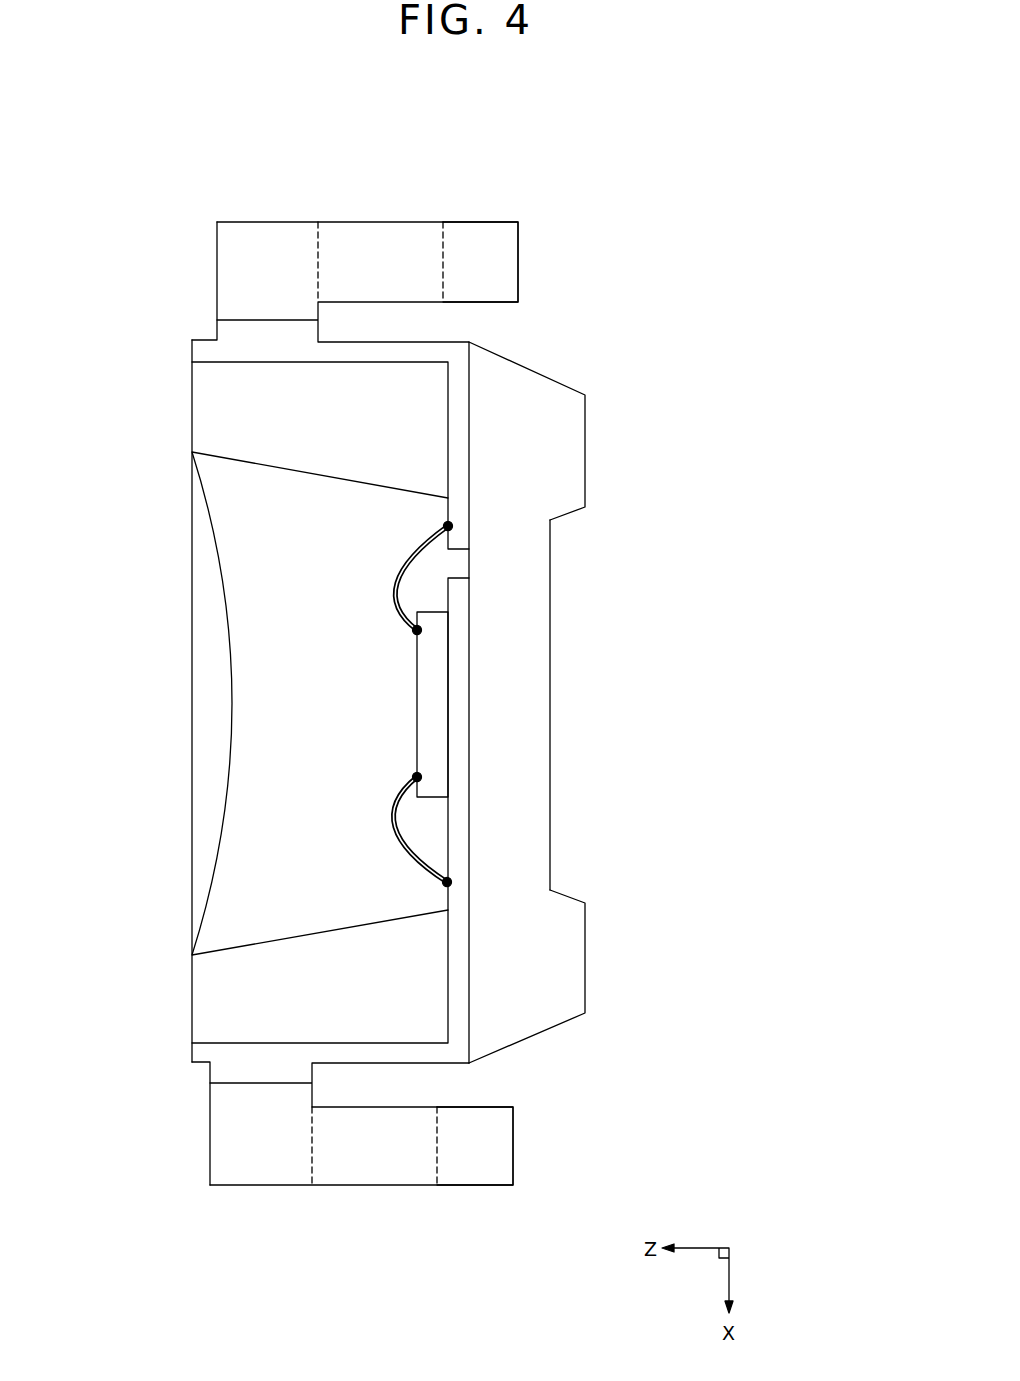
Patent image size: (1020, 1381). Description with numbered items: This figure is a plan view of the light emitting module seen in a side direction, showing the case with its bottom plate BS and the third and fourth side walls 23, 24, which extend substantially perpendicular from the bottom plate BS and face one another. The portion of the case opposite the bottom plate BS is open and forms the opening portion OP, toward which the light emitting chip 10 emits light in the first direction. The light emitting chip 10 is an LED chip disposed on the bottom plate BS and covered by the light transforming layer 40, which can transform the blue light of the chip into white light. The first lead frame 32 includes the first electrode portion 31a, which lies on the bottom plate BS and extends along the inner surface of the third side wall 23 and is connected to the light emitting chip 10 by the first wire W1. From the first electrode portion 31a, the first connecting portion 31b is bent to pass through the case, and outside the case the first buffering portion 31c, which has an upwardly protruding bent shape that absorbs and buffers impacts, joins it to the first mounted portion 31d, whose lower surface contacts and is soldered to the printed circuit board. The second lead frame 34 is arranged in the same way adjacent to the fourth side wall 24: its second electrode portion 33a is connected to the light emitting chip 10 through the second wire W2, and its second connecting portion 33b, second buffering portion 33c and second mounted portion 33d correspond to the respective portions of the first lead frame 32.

The light emitting chip 10 is at (435, 722).
The third side wall 23 is at (200, 1021).
The fourth side wall 24 is at (205, 410).
The light transforming layer 40 is at (239, 915).
The opening portion OP is at (190, 745).
The bottom plate BS is at (552, 567).
The first wire W1 is at (400, 820).
The second wire W2 is at (407, 590).
The first lead frame 32 is at (662, 965).
The first electrode portion 31a is at (457, 970).
The first connecting portion 31b is at (292, 1157).
The first buffering portion 31c is at (417, 1142).
The first mounted portion 31d is at (492, 1120).
The second lead frame 34 is at (668, 222).
The second electrode portion 33a is at (463, 437).
The second connecting portion 33b is at (298, 250).
The second buffering portion 33c is at (423, 268).
The second mounted portion 33d is at (497, 288).